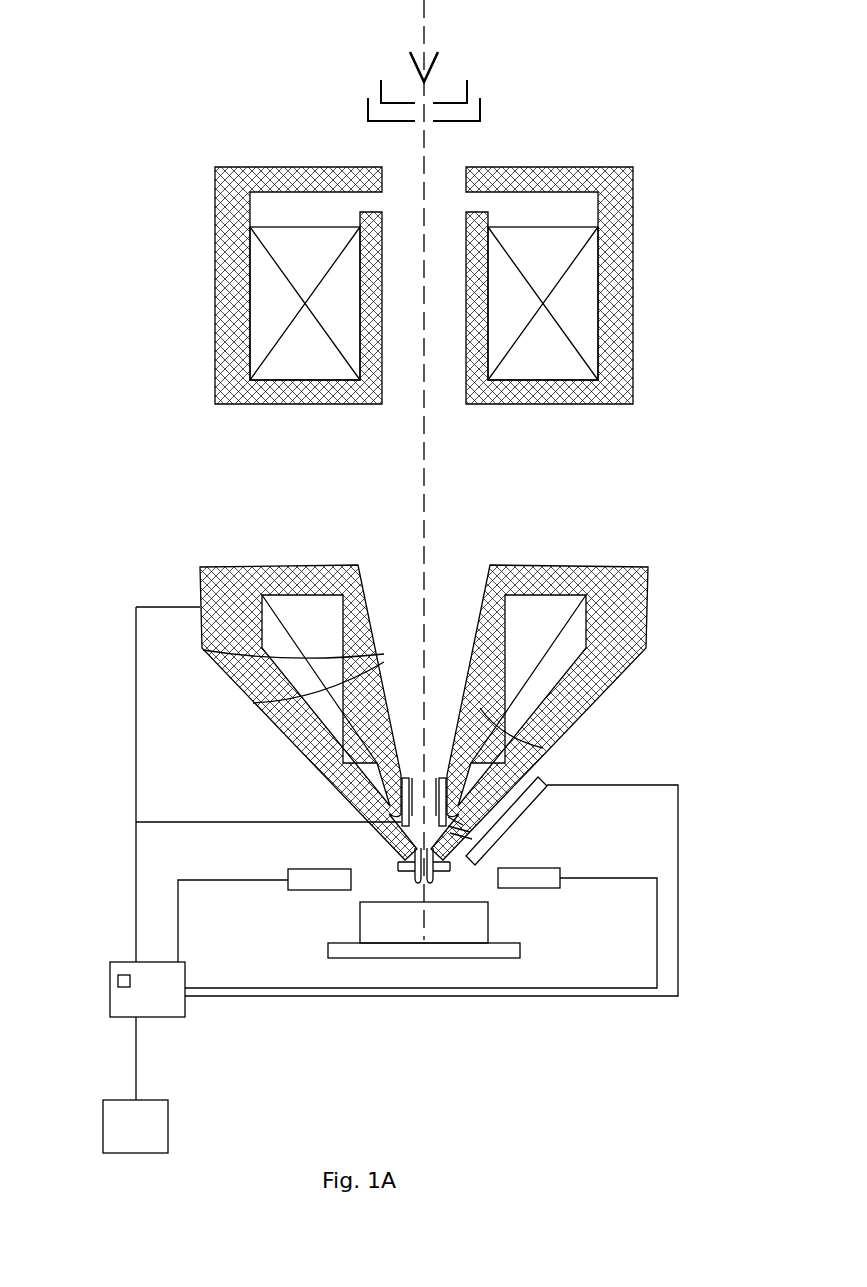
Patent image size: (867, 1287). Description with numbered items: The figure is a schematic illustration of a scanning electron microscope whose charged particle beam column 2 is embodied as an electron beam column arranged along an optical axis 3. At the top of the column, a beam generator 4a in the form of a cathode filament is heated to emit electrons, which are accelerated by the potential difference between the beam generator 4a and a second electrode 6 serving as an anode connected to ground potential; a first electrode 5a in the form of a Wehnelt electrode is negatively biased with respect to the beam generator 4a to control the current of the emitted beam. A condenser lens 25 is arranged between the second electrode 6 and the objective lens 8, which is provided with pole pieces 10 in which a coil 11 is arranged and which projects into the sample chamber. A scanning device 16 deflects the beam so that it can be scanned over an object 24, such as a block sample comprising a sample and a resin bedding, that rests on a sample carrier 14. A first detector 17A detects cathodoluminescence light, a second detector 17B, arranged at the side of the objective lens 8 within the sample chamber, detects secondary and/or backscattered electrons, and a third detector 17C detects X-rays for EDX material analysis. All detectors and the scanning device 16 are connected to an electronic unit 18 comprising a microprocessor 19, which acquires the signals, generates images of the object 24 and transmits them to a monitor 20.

The charged particle beam column 2 is at (208, 72).
The optical axis 3 is at (422, 44).
The beam generator 4a is at (433, 67).
The first electrode 5a is at (467, 85).
The second electrode 6 is at (480, 113).
The condenser lens 25 is at (633, 340).
The objective lens 8 is at (672, 754).
The pole pieces 10 is at (648, 592).
The coil 11 is at (580, 620).
The scanning device 16 is at (396, 792).
The first detector 17A is at (322, 890).
The second detector 17B is at (530, 810).
The third detector 17C is at (525, 888).
The object 24 is at (382, 937).
The sample carrier 14 is at (453, 957).
The electronic unit 18 is at (110, 967).
The microprocessor 19 is at (118, 981).
The monitor 20 is at (160, 1132).